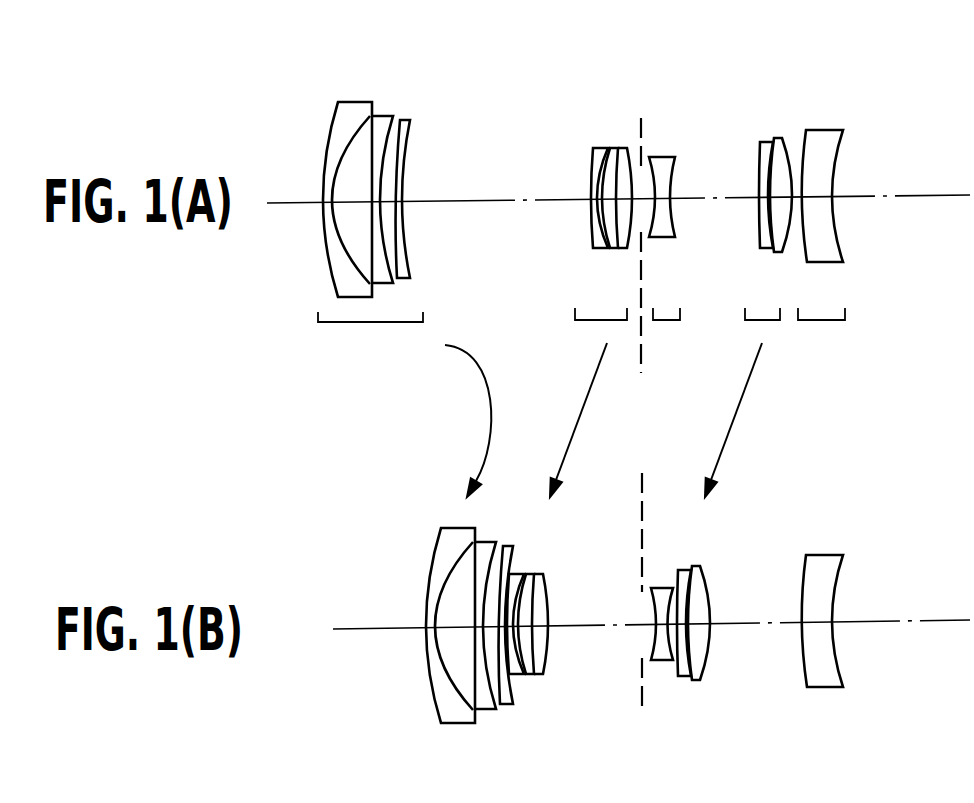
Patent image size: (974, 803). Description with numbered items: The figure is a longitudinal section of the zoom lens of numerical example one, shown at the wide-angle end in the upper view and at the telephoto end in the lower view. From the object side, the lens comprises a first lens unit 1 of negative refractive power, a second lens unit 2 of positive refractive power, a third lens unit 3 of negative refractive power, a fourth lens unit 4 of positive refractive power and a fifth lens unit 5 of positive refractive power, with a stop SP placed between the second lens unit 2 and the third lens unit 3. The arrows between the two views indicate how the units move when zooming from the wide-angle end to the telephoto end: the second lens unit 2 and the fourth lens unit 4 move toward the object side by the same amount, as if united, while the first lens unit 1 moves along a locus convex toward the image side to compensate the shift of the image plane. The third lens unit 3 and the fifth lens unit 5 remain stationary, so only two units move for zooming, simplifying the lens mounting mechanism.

In FIG. 1A, the first lens unit 1 is at (313, 94).
In FIG. 1B, the first lens unit 1 is at (469, 625).
In FIG. 1A, the second lens unit 2 is at (573, 115).
In FIG. 1B, the second lens unit 2 is at (527, 624).
In FIG. 1A, the third lens unit 3 is at (650, 115).
In FIG. 1B, the third lens unit 3 is at (662, 624).
In FIG. 1A, the fourth lens unit 4 is at (798, 117).
In FIG. 1B, the fourth lens unit 4 is at (693, 623).
In FIG. 1A, the fifth lens unit 5 is at (792, 97).
In FIG. 1B, the fifth lens unit 5 is at (822, 621).
In FIG. 1A, the stop SP is at (641, 130).